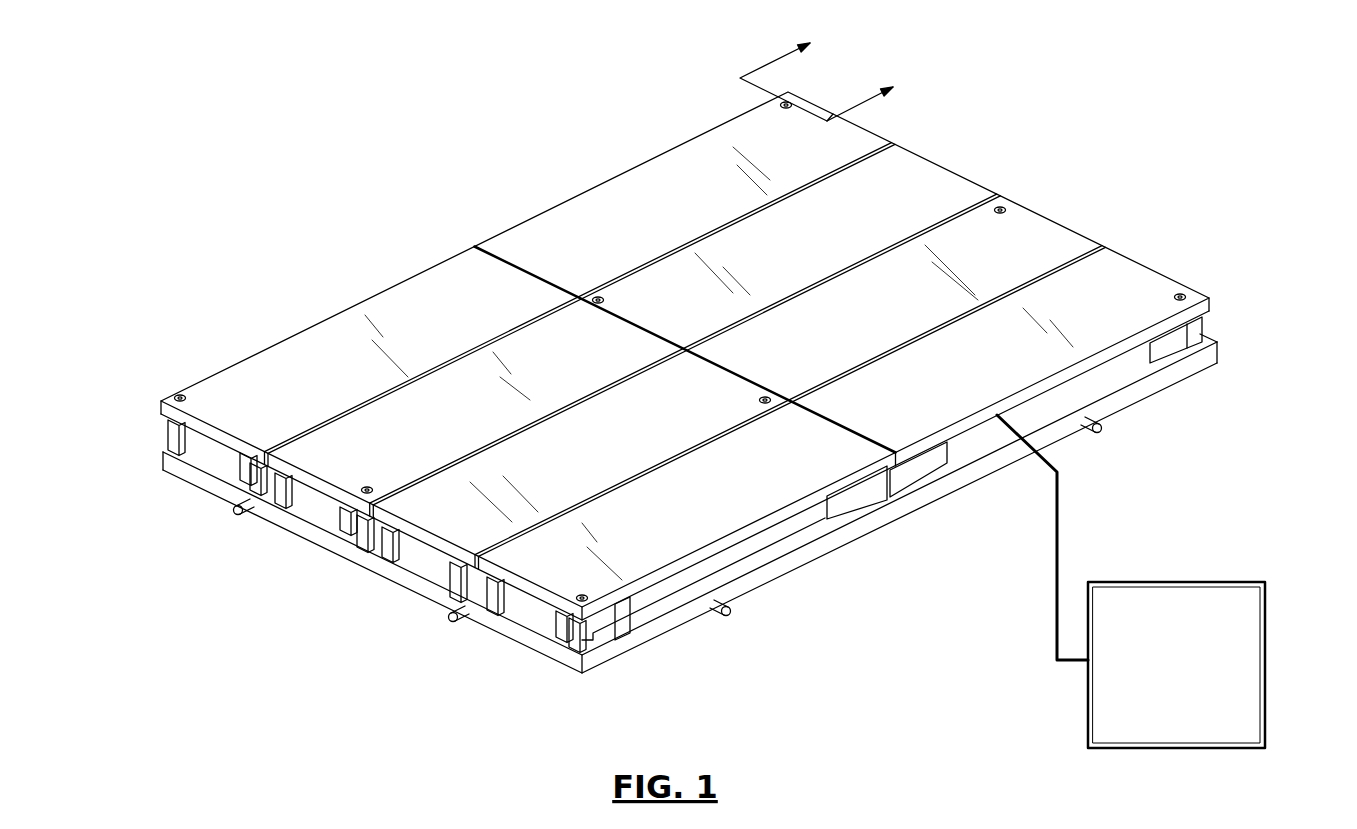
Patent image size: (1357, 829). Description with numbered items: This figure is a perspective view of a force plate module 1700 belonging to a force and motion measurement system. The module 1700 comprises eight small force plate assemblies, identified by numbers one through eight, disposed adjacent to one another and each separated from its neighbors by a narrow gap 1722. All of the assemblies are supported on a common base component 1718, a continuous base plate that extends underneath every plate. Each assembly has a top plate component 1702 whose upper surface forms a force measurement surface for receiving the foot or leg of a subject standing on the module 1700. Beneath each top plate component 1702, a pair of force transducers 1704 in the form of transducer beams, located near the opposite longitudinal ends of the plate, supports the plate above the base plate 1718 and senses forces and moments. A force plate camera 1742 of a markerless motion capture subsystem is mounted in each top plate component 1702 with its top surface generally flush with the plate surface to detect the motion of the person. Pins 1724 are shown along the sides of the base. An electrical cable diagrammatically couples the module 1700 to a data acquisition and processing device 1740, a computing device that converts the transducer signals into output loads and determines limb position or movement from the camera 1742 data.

The force plate module 1700 is at (372, 632).
The top plate component 1702 is at (338, 455).
The force transducers 1704 is at (223, 452).
The base component 1718 is at (765, 578).
The narrow gap 1722 is at (453, 357).
The connector pin 1724 is at (243, 513).
The data acquisition and processing device 1740 is at (1088, 725).
The force plate cameras 1742 is at (179, 396).